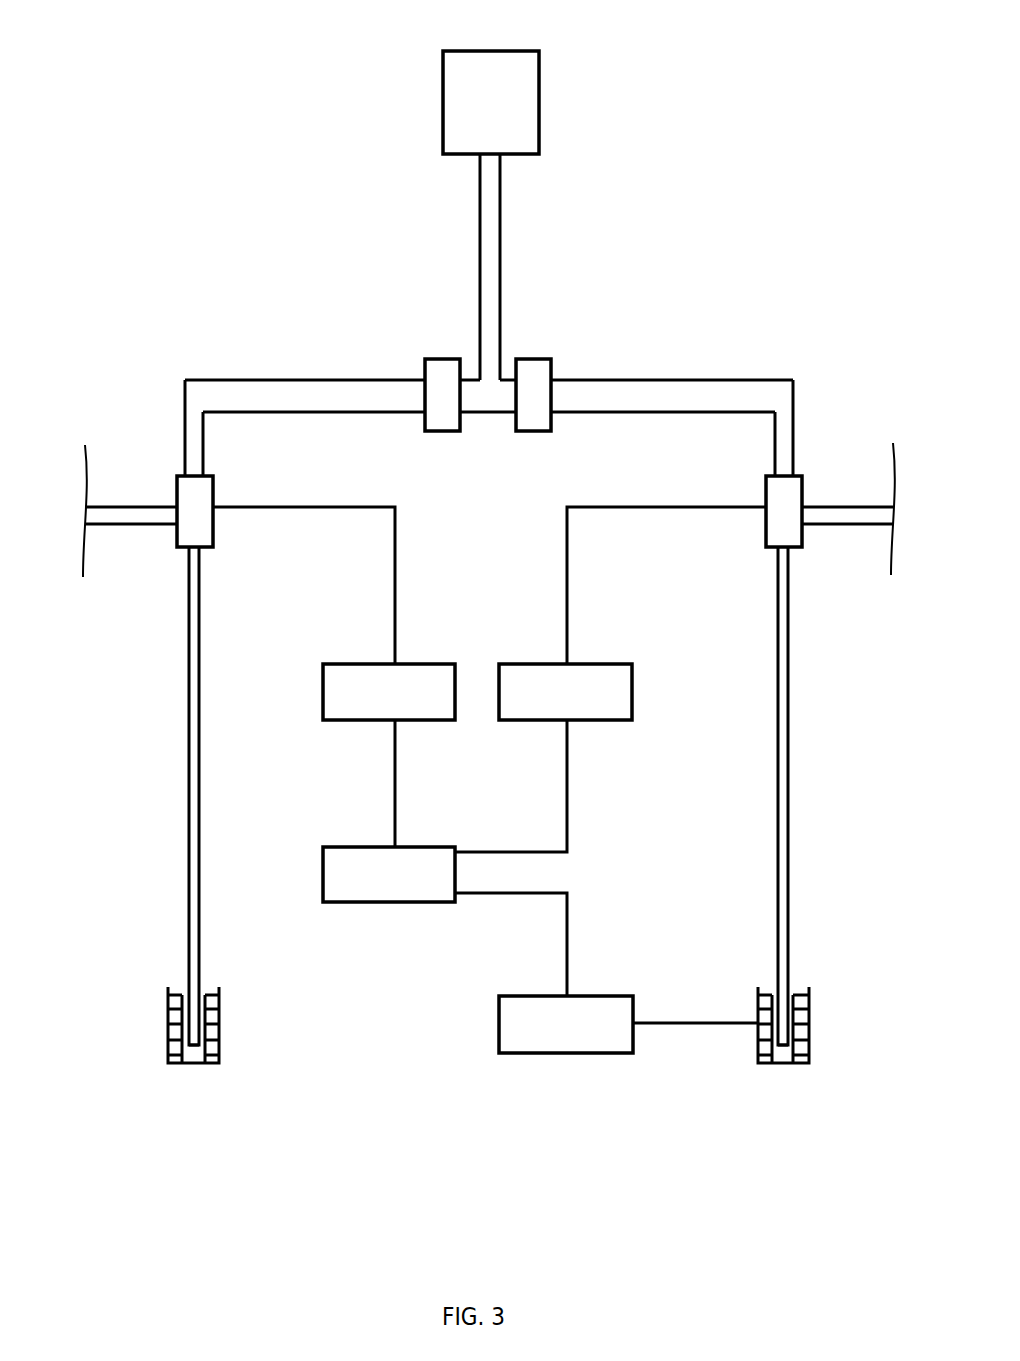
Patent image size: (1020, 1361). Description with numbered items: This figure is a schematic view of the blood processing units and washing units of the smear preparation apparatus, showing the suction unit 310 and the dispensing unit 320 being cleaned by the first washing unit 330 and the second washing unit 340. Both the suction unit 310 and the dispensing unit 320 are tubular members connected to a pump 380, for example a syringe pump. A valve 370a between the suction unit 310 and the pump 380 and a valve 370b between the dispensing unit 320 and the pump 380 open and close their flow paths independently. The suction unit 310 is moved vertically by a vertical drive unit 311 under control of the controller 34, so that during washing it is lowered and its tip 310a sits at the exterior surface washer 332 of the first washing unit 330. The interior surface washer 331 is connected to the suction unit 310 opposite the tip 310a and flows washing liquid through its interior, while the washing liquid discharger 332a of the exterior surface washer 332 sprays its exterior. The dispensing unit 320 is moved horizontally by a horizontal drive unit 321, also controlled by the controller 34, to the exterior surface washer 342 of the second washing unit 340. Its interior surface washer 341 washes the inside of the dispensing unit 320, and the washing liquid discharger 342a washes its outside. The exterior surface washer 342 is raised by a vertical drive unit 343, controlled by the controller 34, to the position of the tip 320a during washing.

The pump 380 is at (540, 78).
The valve 370a is at (427, 359).
The valve 370b is at (549, 359).
The first washing unit 330 is at (118, 754).
The interior surface washer 331 is at (130, 525).
The exterior surface washer 332 is at (140, 1046).
The washing liquid discharger 332a is at (176, 984).
The second washing unit 340 is at (802, 753).
The interior surface washer 341 is at (860, 523).
The exterior surface washer 342 is at (822, 1023).
The washing liquid discharger 342a is at (764, 982).
The suction unit 310 is at (198, 857).
The tip 310a is at (192, 1048).
The dispensing unit 320 is at (779, 857).
The tip 320a is at (782, 1048).
The vertical drive unit 311 is at (433, 662).
The horizontal drive unit 321 is at (612, 662).
The controller 34 is at (418, 847).
The vertical drive unit 343 is at (612, 996).